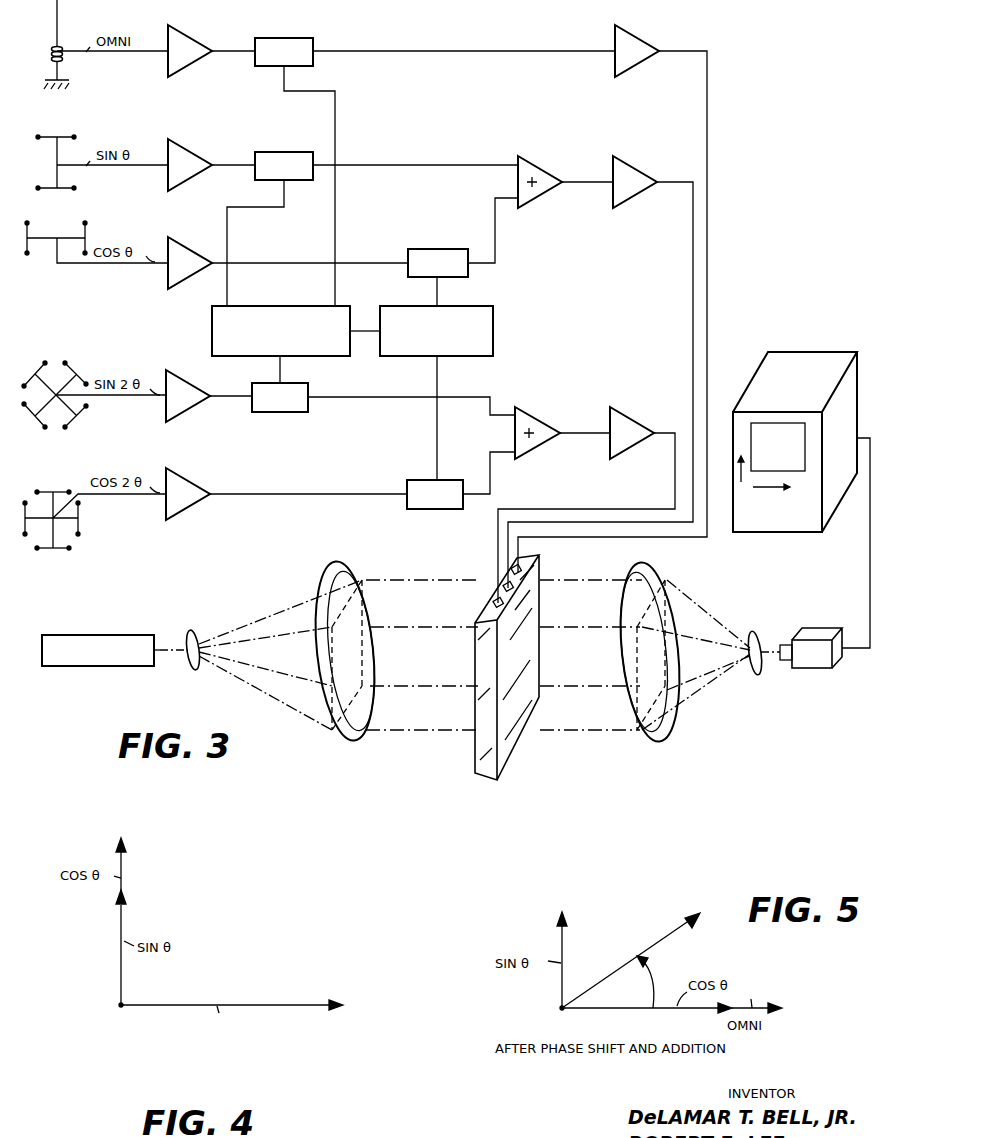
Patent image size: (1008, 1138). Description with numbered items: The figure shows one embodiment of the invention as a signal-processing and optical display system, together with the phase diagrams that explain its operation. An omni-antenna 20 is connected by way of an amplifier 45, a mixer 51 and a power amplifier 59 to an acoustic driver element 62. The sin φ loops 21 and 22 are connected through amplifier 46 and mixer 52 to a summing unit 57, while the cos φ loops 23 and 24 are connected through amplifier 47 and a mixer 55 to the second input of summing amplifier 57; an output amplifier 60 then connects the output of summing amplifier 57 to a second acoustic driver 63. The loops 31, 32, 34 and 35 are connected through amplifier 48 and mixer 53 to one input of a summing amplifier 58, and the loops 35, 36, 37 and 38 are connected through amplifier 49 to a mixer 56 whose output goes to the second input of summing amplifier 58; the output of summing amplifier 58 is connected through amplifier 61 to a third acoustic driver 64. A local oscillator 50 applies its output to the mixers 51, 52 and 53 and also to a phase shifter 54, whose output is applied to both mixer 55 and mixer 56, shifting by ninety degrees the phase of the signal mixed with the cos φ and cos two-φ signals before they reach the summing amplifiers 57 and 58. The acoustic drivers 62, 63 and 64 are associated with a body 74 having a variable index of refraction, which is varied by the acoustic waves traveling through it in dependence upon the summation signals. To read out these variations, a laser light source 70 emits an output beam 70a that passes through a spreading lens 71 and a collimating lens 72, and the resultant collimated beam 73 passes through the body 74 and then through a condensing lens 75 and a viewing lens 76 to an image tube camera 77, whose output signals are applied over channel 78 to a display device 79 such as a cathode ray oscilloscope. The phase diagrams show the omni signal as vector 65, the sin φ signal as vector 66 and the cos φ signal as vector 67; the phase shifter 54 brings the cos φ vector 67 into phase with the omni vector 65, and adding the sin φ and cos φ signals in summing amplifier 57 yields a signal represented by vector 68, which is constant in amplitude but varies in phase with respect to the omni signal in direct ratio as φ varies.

In FIG. 3, the omni-antenna 20 is at (59, 47).
In FIG. 3, the sin φ loop 21 is at (62, 137).
In FIG. 3, the sin φ loop 22 is at (52, 189).
In FIG. 3, the cos φ loop 23 is at (87, 236).
In FIG. 3, the cos φ loop 24 is at (30, 230).
In FIG. 3, the loop 31 is at (69, 363).
In FIG. 3, the loop 32 is at (41, 364).
In FIG. 3, the loop 34 is at (74, 423).
In FIG. 3, the loop 35 is at (45, 490).
In FIG. 3, the loop 36 is at (33, 550).
In FIG. 3, the loop 37 is at (57, 550).
In FIG. 3, the loop 38 is at (80, 526).
In FIG. 3, the amplifier 45 is at (197, 60).
In FIG. 3, the amplifier 46 is at (197, 174).
In FIG. 3, the amplifier 47 is at (197, 272).
In FIG. 3, the amplifier 48 is at (195, 405).
In FIG. 3, the amplifier 49 is at (195, 503).
In FIG. 3, the local oscillator 50 is at (212, 323).
In FIG. 3, the mixer 51 is at (312, 44).
In FIG. 3, the mixer 52 is at (285, 180).
In FIG. 3, the mixer 53 is at (298, 412).
In FIG. 3, the phase shifter 54 is at (493, 331).
In FIG. 3, the mixer 55 is at (440, 252).
In FIG. 3, the mixer 56 is at (407, 484).
In FIG. 3, the summing amplifier 57 is at (531, 173).
In FIG. 3, the summing amplifier 58 is at (534, 426).
In FIG. 3, the power amplifier 59 is at (644, 60).
In FIG. 3, the output amplifier 60 is at (642, 191).
In FIG. 3, the amplifier 61 is at (639, 442).
In FIG. 3, the acoustic driver element 62 is at (528, 563).
In FIG. 3, the acoustic driver 63 is at (520, 590).
In FIG. 3, the acoustic driver 64 is at (490, 603).
In FIG. 4, the omni vector 65 is at (252, 1004).
In FIG. 5, the omni vector 65 is at (753, 1005).
In FIG. 4, the sin φ vector 66 is at (124, 921).
In FIG. 5, the sin φ vector 66 is at (564, 942).
In FIG. 4, the cos φ vector 67 is at (124, 880).
In FIG. 5, the cos φ vector 67 is at (692, 1012).
In FIG. 5, the resultant vector 68 is at (657, 945).
In FIG. 3, the laser light source 70 is at (131, 660).
In FIG. 3, the output beam 70a is at (161, 641).
In FIG. 3, the spreading lens 71 is at (188, 671).
In FIG. 3, the collimating lens 72 is at (330, 740).
In FIG. 3, the collimated beam 73 is at (406, 732).
In FIG. 3, the body 74 is at (475, 774).
In FIG. 3, the condensing lens 75 is at (643, 736).
In FIG. 3, the viewing lens 76 is at (749, 676).
In FIG. 3, the image tube camera 77 is at (818, 630).
In FIG. 3, the channel 78 is at (870, 550).
In FIG. 3, the display device 79 is at (808, 355).